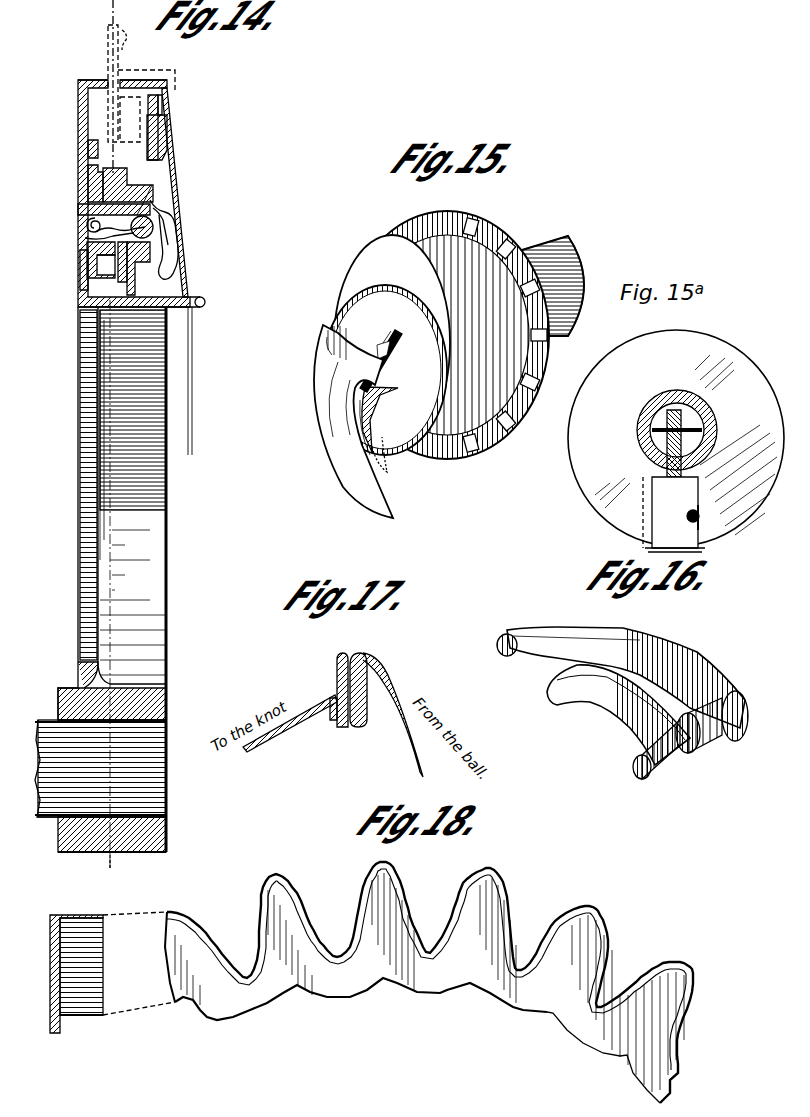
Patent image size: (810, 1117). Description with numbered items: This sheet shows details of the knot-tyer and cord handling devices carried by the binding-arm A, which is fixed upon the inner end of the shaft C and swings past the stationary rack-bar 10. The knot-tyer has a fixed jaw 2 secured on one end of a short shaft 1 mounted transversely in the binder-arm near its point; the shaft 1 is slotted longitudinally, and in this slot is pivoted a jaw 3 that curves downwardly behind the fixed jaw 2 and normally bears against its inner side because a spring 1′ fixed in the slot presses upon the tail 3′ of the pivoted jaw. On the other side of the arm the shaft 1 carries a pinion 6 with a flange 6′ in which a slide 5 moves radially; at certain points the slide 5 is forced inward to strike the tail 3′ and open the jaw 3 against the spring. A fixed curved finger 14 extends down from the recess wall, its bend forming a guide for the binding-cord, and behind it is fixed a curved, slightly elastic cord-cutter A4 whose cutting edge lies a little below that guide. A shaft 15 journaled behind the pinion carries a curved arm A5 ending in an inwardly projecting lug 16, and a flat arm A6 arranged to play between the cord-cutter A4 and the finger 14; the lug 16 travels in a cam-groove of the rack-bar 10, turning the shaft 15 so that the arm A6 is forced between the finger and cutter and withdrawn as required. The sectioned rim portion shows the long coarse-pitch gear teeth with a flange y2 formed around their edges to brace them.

In FIG. 14, the stationary rack-bar 10 is at (108, 58).
In FIG. 14, the binding-arm A is at (167, 125).
In FIG. 17, the cord-cutter A4 is at (332, 720).
In FIG. 16, the curved arm A5 is at (628, 685).
In FIG. 16, the flat arm A6 is at (626, 715).
In FIG. 17, the flat arm A6 is at (341, 652).
In FIG. 14, the shaft C is at (110, 786).
In FIG. 15, the short shaft 1 is at (553, 285).
In FIG. 14, the spring 1′ is at (90, 228).
In FIG. 14, the fixed jaw 2 is at (172, 255).
In FIG. 15, the fixed jaw 2 is at (345, 405).
In FIG. 14, the pivoted jaw 3 is at (153, 222).
In FIG. 15, the pivoted jaw 3 is at (380, 429).
In FIG. 15A, the pivoted jaw 3 is at (690, 422).
In FIG. 14, the tail 3′ is at (118, 244).
In FIG. 15A, the tail 3′ is at (674, 455).
In FIG. 14, the slide 5 is at (118, 268).
In FIG. 15A, the slide 5 is at (674, 514).
In FIG. 14, the pinion 6 is at (80, 265).
In FIG. 15, the pinion 6 is at (397, 238).
In FIG. 14, the flange 6′ is at (128, 172).
In FIG. 15, the flange 6′ is at (362, 252).
In FIG. 15A, the flange 6′ is at (676, 438).
In FIG. 14, the curved finger 14 is at (168, 172).
In FIG. 17, the curved finger 14 is at (386, 715).
In FIG. 16, the shaft 15 is at (640, 777).
In FIG. 14, the lug 16 is at (90, 145).
In FIG. 16, the lug 16 is at (506, 657).
In FIG. 18, the flange y2 is at (371, 979).